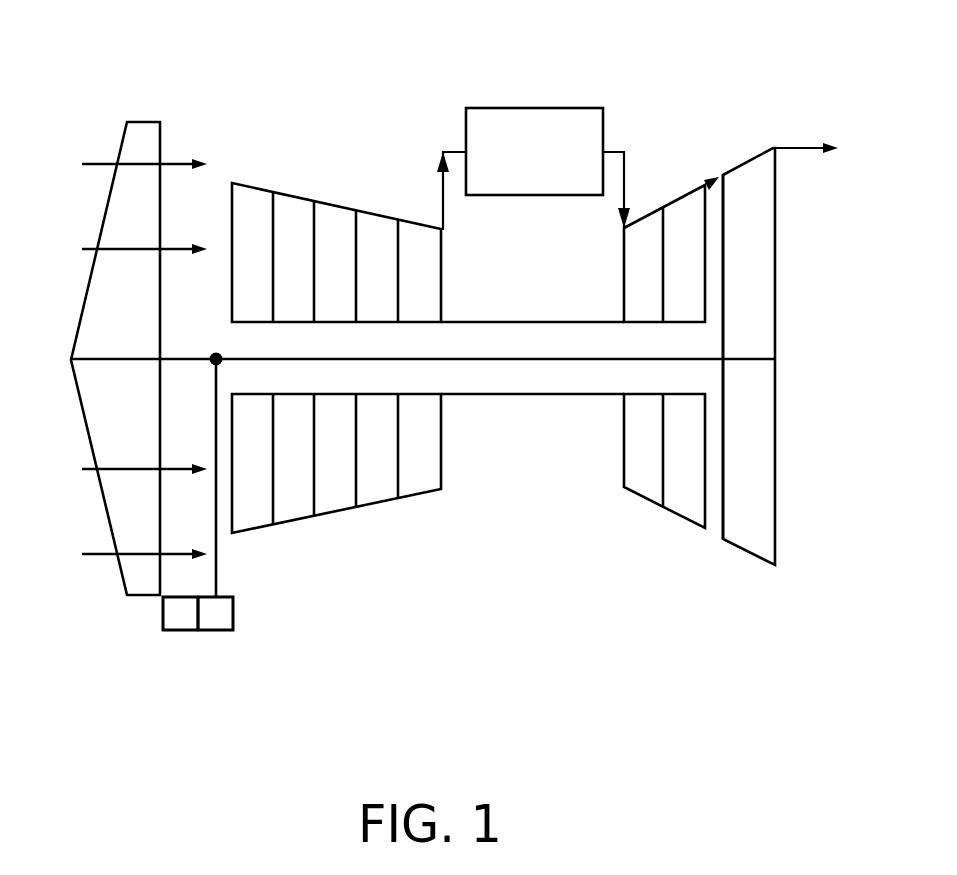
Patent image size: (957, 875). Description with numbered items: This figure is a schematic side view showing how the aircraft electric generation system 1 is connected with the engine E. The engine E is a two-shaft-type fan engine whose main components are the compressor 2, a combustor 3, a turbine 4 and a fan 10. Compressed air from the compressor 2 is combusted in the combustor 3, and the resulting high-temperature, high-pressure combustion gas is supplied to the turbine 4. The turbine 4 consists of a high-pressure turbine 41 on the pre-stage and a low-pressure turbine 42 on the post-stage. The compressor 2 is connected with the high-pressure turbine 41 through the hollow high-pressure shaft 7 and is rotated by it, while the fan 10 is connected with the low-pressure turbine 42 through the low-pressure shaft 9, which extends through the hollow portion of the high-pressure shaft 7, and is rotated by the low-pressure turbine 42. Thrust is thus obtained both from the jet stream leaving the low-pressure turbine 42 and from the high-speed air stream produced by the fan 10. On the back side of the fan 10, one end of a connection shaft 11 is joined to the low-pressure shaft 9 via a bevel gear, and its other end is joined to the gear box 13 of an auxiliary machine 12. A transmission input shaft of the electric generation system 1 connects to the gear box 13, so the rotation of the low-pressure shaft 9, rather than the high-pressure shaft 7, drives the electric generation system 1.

The engine E is at (386, 170).
The aircraft electric generation system 1 is at (176, 632).
The compressor 2 is at (298, 197).
The combustor 3 is at (534, 108).
The turbine 4 is at (731, 301).
The high-pressure turbine 41 is at (684, 194).
The low-pressure turbine 42 is at (749, 327).
The high-pressure shaft 7 is at (503, 398).
The low-pressure shaft 9 is at (573, 361).
The fan 10 is at (147, 122).
The connection shaft 11 is at (218, 562).
The auxiliary machine 12 is at (256, 644).
The gear box 13 is at (215, 632).